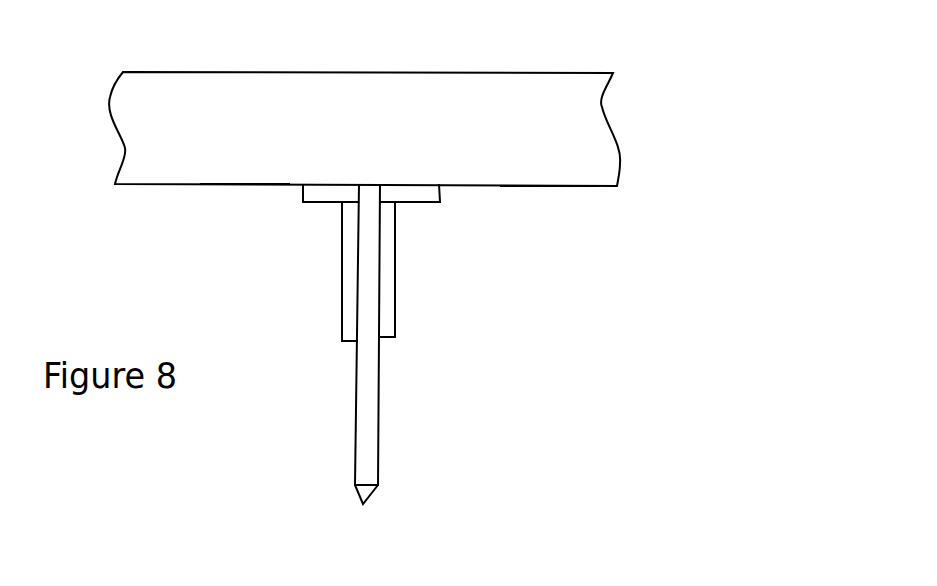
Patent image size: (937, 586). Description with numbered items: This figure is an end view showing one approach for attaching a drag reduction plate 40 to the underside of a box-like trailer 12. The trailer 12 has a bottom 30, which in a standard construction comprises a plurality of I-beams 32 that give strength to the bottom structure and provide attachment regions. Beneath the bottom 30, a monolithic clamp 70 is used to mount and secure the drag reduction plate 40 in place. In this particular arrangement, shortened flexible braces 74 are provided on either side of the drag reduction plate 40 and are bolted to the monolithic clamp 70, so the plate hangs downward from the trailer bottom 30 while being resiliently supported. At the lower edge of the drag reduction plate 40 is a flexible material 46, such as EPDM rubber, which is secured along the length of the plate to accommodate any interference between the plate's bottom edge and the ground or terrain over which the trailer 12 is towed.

The trailer 12 is at (432, 108).
The bottom 30 is at (553, 188).
The I-beams 32 is at (243, 185).
The drag reduction plate 40 is at (370, 380).
The flexible material 46 is at (368, 493).
The monolithic clamp 70 is at (325, 192).
The shortened flexible braces 74 is at (348, 256).